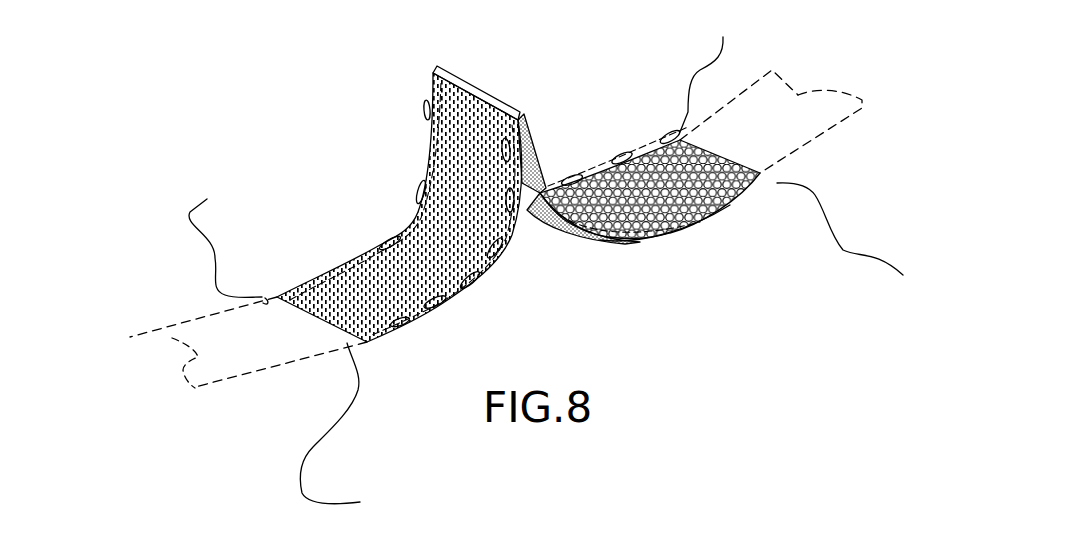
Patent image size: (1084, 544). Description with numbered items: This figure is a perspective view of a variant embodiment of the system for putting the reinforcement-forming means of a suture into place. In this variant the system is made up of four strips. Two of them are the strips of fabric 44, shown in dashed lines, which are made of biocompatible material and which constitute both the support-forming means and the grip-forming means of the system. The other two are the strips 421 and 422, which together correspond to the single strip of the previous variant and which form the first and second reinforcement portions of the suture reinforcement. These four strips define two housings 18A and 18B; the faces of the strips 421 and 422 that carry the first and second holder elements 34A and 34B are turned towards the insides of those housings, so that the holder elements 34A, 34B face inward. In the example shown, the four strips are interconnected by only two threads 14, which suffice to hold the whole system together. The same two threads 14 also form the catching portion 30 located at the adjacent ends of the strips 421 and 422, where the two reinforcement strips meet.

The thread 14 is at (190, 212).
The first housing 18A is at (318, 336).
The second housing 18B is at (768, 164).
The catching portion 30 is at (500, 84).
The first holder element 34A is at (433, 230).
The second holder element 34B is at (602, 203).
The strip of fabric 44 is at (183, 360).
The first strip 421 is at (408, 327).
The second strip 422 is at (655, 233).